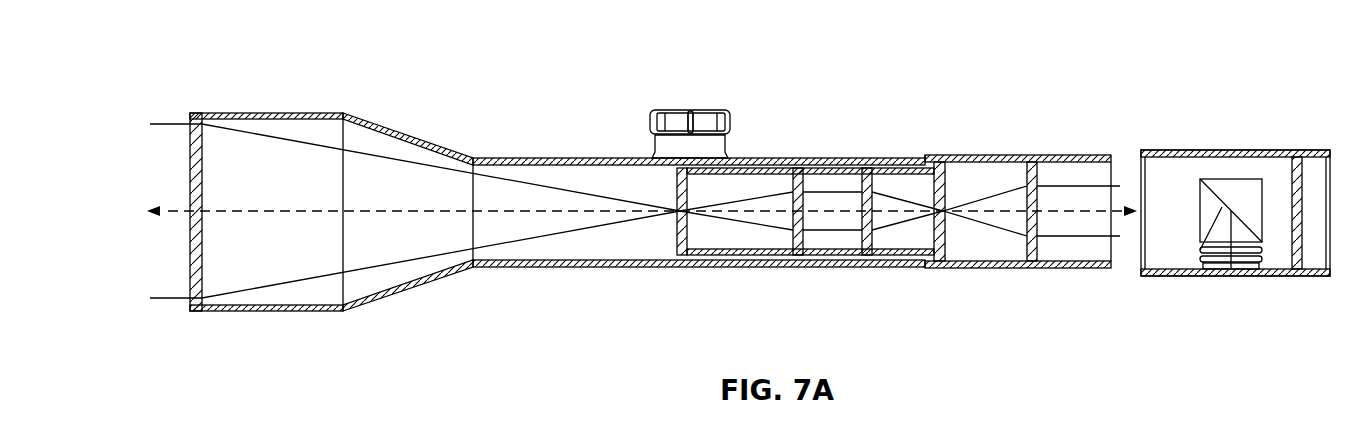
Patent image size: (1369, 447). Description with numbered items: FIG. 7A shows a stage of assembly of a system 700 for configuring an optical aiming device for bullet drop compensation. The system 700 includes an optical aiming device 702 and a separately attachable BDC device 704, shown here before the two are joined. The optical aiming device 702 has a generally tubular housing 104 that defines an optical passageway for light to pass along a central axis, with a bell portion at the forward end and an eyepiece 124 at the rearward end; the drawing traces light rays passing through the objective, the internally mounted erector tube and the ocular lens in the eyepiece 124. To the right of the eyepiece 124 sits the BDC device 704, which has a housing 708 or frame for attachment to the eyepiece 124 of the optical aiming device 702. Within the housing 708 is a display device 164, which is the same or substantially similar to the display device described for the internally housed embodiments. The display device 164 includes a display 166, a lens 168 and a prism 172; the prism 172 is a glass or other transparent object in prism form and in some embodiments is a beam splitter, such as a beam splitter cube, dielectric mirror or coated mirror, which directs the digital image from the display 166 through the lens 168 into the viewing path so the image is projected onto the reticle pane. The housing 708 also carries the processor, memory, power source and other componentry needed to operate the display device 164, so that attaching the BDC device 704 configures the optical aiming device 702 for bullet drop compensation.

The system 700 is at (789, 58).
The optical aiming device 702 is at (500, 157).
The housing 104 is at (542, 157).
The eyepiece portion 124 is at (1017, 270).
The housing 708 is at (1167, 150).
The BDC device 704 is at (1308, 285).
The prism 172 is at (1250, 178).
The display device 164 is at (1215, 170).
The display 166 is at (1253, 265).
The lens 168 is at (1207, 251).